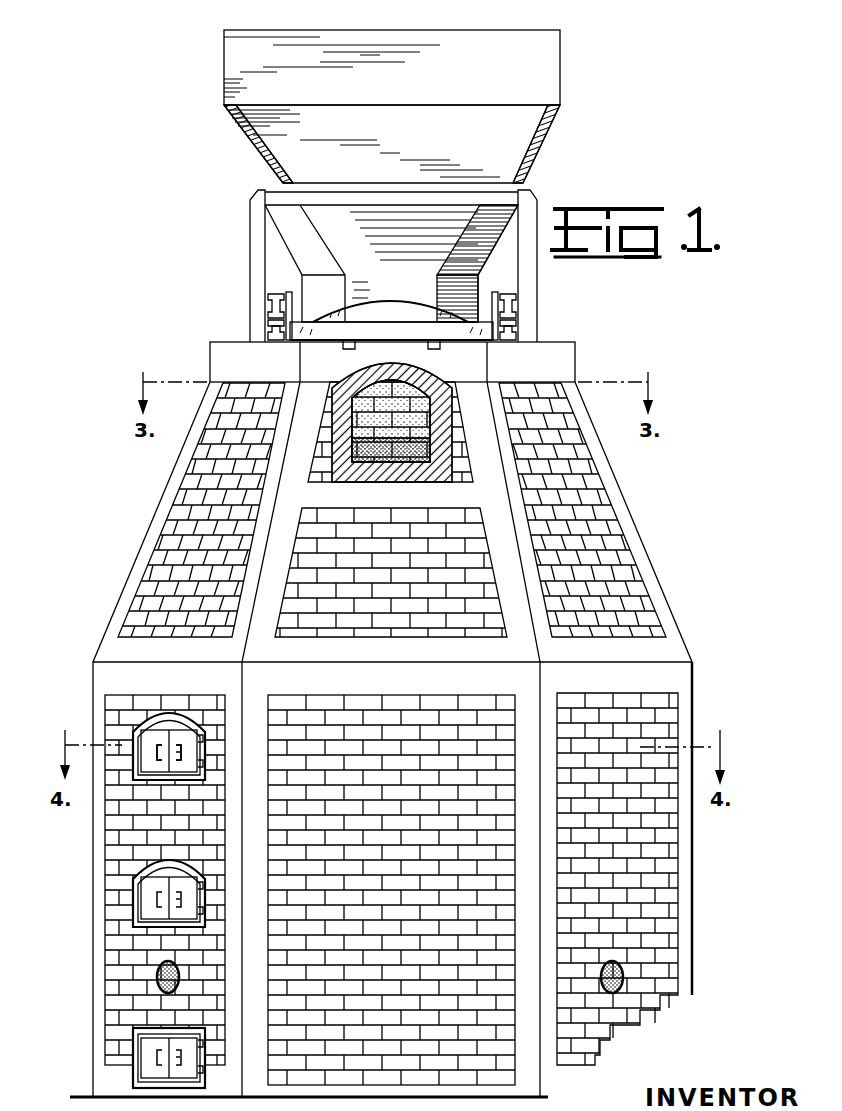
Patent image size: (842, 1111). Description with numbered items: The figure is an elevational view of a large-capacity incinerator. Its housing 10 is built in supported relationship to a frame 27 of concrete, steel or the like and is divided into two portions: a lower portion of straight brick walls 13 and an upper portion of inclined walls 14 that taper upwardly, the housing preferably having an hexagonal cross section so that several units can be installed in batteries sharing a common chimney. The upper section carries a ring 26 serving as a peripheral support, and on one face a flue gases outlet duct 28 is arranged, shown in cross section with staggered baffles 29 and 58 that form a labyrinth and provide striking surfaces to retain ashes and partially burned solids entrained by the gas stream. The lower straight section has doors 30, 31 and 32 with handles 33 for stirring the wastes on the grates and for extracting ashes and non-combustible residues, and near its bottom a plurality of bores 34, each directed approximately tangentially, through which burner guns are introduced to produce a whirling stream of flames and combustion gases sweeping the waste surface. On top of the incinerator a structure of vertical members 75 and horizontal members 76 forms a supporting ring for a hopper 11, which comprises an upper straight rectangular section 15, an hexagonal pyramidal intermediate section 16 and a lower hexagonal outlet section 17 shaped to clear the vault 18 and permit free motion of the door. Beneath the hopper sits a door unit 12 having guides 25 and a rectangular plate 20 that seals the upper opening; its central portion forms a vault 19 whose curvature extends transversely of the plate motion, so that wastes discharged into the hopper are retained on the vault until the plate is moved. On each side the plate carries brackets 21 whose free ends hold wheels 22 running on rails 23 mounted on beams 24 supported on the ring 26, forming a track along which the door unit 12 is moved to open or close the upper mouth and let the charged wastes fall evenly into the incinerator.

The housing 10 is at (704, 861).
The hopper 11 is at (220, 88).
The door unit 12 is at (473, 342).
The brick walls 13 is at (641, 892).
The inclined walls 14 is at (620, 577).
The upper straight rectangular section 15 is at (237, 53).
The hexagonal pyramidal intermediate section 16 is at (262, 134).
The lower hexagonal outlet section 17 is at (478, 253).
The vault 18 is at (410, 302).
The vault 19 is at (375, 314).
The plate 20 is at (303, 336).
The brackets 21 is at (289, 292).
The wheels 22 is at (270, 304).
The rails 23 is at (267, 320).
The beams 24 is at (268, 332).
The guides 25 is at (345, 346).
The ring 26 is at (552, 338).
The frame 27 is at (626, 521).
The flue gases outlet duct 28 is at (378, 470).
The baffle 29 is at (408, 416).
The door 30 is at (147, 1060).
The door 31 is at (147, 887).
The door 32 is at (146, 735).
The handles 33 is at (174, 743).
The bores 34 is at (155, 968).
The baffle 58 is at (406, 454).
The vertical members 75 is at (258, 241).
The horizontal members 76 is at (280, 192).